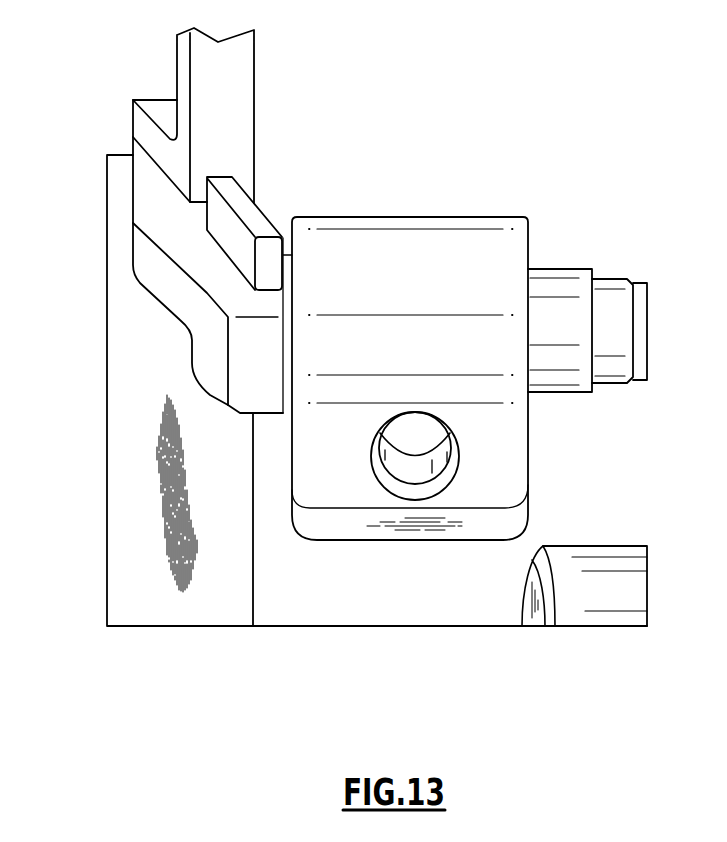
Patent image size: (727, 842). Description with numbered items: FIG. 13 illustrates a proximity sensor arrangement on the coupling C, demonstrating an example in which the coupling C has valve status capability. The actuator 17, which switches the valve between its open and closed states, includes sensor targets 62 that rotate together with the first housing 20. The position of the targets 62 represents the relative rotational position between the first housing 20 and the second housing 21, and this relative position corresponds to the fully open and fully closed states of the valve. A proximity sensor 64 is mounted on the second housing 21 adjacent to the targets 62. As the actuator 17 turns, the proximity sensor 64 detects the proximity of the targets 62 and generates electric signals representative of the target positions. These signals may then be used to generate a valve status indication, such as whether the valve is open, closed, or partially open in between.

The actuator 17 is at (242, 91).
The sensor targets 62 is at (262, 272).
The proximity sensor 64 is at (566, 260).
The first housing 20 is at (165, 602).
The second housing 21 is at (345, 597).
The coupling C is at (58, 615).